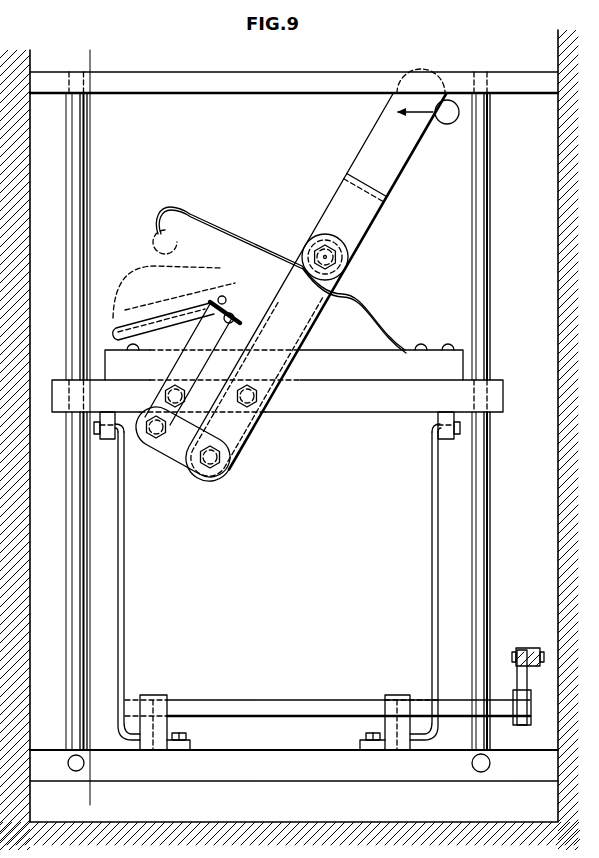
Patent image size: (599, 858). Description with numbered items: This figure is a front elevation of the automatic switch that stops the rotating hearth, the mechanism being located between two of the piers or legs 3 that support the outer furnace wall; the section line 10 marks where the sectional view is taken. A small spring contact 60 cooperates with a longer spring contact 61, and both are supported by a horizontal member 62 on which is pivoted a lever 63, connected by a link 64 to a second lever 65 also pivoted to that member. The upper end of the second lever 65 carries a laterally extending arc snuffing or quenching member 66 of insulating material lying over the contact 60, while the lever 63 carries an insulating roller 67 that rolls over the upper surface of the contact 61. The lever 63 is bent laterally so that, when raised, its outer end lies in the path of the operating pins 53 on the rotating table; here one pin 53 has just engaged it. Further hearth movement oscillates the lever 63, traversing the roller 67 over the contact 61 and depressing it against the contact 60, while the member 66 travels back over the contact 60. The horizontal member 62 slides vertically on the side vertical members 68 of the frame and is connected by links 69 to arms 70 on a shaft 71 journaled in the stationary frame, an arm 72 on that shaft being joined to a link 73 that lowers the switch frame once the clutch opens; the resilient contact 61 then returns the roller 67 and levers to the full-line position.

The piers or legs 3 is at (550, 559).
The section line 10— 10 is at (90, 50).
The operating pin 53 is at (447, 124).
The spring contact 60 is at (181, 311).
The spring contact 61 is at (279, 240).
The horizontal member 62 is at (364, 403).
The lever 63 is at (278, 373).
The link 64 is at (183, 459).
The second lever 65 is at (222, 343).
The arc snuffing or quenching member 66 is at (237, 306).
The roller 67 is at (348, 257).
The side vertical members 68 is at (483, 323).
The links 69 is at (123, 584).
The arms 70 is at (137, 706).
The shaft 71 is at (348, 699).
The arm 72 is at (523, 692).
The link 73 is at (530, 648).